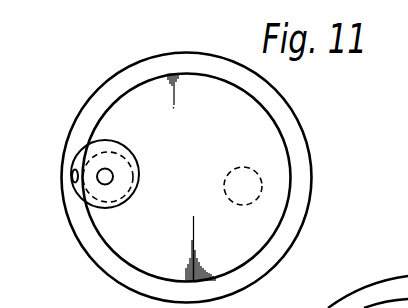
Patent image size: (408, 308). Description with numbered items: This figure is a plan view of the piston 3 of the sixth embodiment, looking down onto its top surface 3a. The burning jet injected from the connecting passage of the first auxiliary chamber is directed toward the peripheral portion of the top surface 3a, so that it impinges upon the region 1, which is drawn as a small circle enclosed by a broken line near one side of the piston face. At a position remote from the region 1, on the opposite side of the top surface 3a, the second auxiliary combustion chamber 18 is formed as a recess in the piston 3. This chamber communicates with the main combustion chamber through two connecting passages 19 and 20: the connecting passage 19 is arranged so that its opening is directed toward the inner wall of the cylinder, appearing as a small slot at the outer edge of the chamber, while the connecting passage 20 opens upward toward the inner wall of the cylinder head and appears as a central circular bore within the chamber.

The region I 1 is at (262, 186).
The piston 3 is at (297, 227).
The top surface 3a is at (179, 197).
The second auxiliary combustion chamber 18 is at (101, 148).
The connecting passage 19 is at (72, 177).
The connecting passage 20 is at (114, 170).